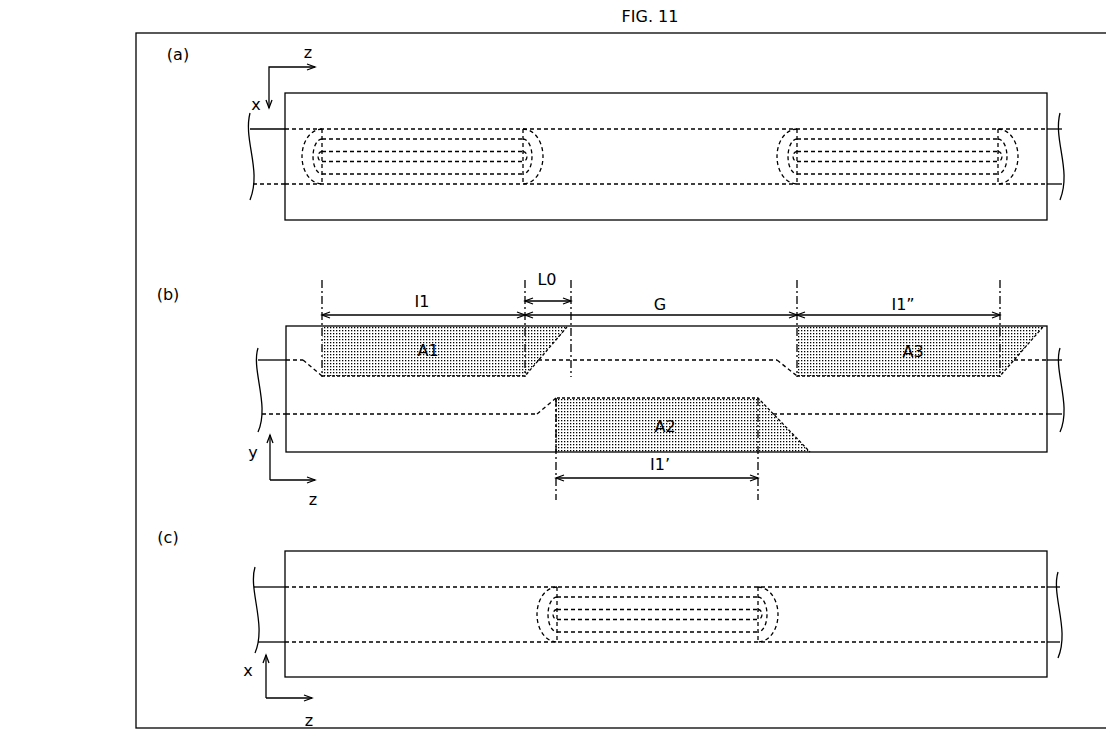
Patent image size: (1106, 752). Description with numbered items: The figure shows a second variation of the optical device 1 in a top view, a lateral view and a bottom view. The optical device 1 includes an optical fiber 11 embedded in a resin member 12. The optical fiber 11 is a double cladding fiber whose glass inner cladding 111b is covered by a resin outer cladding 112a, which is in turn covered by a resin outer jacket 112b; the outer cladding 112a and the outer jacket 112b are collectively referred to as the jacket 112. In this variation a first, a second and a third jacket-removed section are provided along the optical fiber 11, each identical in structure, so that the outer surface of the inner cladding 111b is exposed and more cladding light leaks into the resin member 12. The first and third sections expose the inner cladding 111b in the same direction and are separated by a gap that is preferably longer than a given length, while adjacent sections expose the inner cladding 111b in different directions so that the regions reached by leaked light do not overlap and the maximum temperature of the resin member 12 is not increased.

The optical device 1 is at (1074, 103).
The optical fiber 11 is at (669, 129).
The resin member 12 is at (717, 93).
The inner cladding 111b is at (420, 157).
The outer cladding 112a is at (398, 174).
The outer jacket 112b is at (440, 184).
The jacket 112 is at (422, 205).